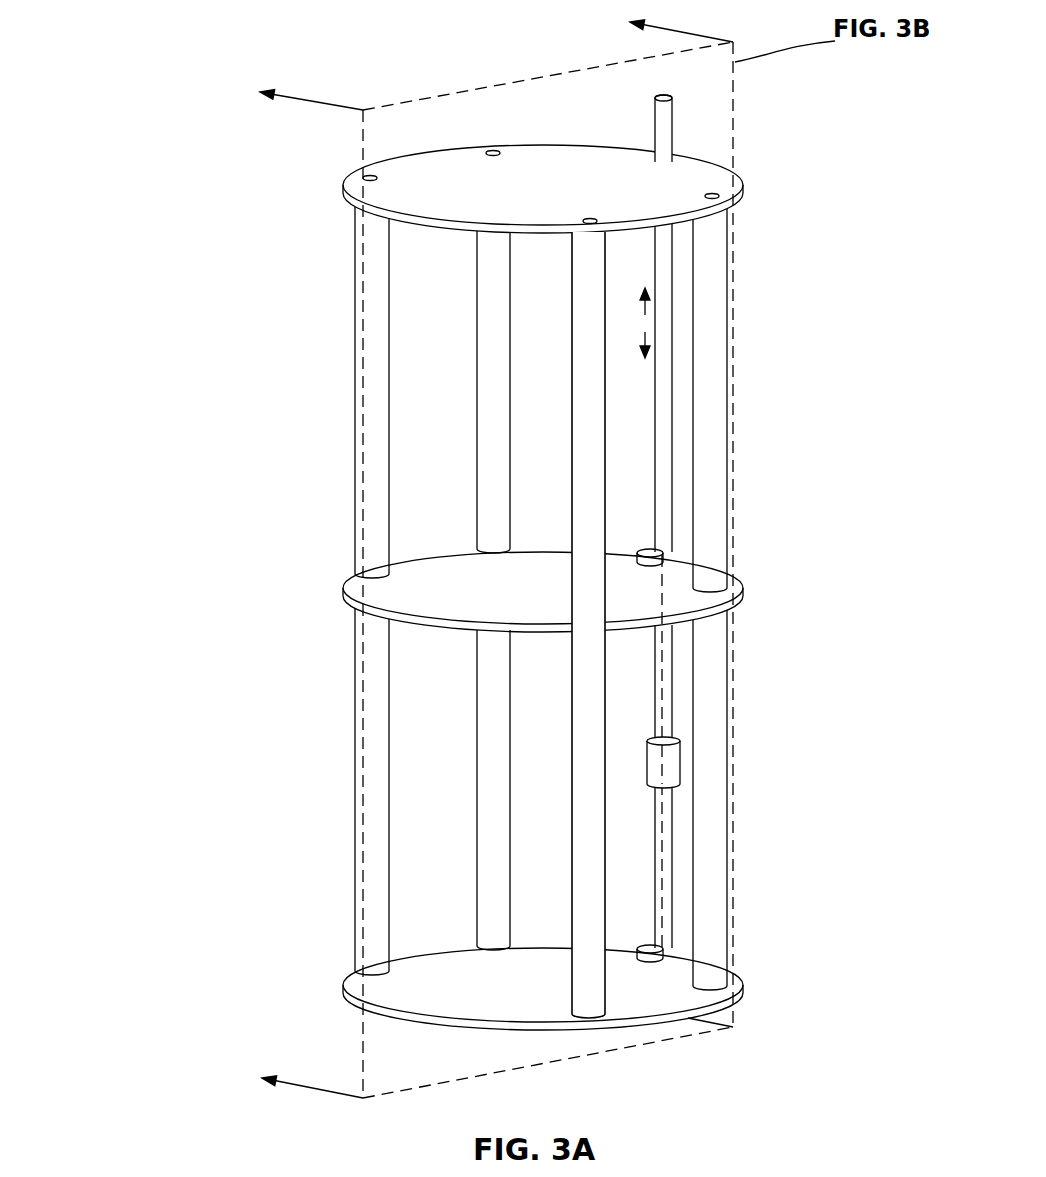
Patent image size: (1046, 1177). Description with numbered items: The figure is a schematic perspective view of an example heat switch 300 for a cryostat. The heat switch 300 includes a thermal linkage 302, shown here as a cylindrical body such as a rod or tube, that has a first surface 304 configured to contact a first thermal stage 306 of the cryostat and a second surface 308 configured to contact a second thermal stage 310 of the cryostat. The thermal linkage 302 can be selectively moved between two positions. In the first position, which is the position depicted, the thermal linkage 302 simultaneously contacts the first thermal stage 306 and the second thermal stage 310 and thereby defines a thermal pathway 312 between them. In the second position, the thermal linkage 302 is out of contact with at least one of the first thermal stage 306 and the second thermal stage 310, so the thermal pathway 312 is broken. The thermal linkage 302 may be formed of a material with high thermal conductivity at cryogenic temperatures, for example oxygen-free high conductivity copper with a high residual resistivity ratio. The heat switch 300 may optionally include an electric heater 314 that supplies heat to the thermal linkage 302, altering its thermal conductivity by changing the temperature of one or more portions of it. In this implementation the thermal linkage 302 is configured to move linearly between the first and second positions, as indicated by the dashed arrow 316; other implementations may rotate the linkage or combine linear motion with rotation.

The heat switch 300 is at (172, 58).
The thermal linkage 302 is at (672, 132).
The first surface 304 is at (663, 560).
The first thermal stage 306 is at (345, 590).
The second surface 308 is at (660, 956).
The second thermal stage 310 is at (345, 985).
The thermal pathway 312 is at (663, 641).
The electric heater 314 is at (680, 762).
The dashed arrow 316 is at (647, 325).